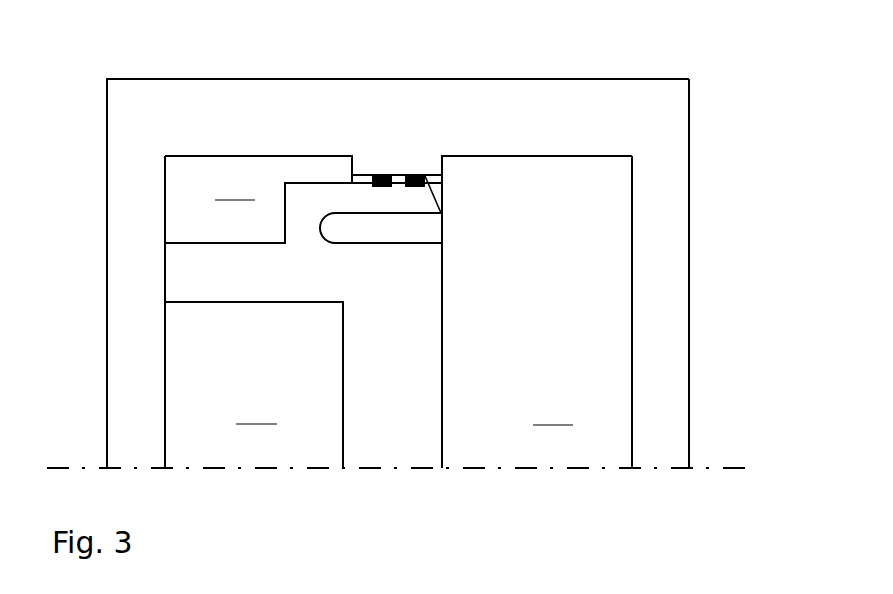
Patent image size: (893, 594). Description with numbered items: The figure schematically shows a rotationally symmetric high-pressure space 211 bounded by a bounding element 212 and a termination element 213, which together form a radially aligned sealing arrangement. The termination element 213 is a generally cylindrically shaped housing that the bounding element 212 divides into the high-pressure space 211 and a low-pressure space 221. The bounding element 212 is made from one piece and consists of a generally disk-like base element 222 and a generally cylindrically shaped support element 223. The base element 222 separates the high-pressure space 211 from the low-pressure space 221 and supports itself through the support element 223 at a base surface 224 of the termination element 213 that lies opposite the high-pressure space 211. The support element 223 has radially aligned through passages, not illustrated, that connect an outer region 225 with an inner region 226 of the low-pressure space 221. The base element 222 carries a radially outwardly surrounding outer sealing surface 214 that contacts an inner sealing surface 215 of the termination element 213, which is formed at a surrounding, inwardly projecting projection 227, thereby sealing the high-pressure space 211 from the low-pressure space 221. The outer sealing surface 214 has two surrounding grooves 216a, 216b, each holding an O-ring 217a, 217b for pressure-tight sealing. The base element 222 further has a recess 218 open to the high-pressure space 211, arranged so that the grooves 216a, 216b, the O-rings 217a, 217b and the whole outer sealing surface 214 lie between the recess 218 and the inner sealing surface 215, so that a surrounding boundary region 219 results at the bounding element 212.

The high-pressure space 211 is at (582, 312).
The bounding element 212 is at (405, 446).
The termination element 213 is at (658, 430).
The outer sealing surface 214 is at (441, 213).
The inner sealing surface 215 is at (442, 157).
The groove 216a is at (422, 173).
The groove 216b is at (387, 173).
The O-ring 217a is at (412, 175).
The O-ring 217b is at (372, 175).
The recess 218 is at (420, 232).
The boundary region 219 is at (442, 197).
The low-pressure space 221 is at (183, 210).
The base element 222 is at (428, 361).
The support element 223 is at (183, 268).
The base surface 224 is at (123, 448).
The outer region 225 is at (303, 210).
The inner region 226 is at (254, 385).
The projection 227 is at (360, 163).